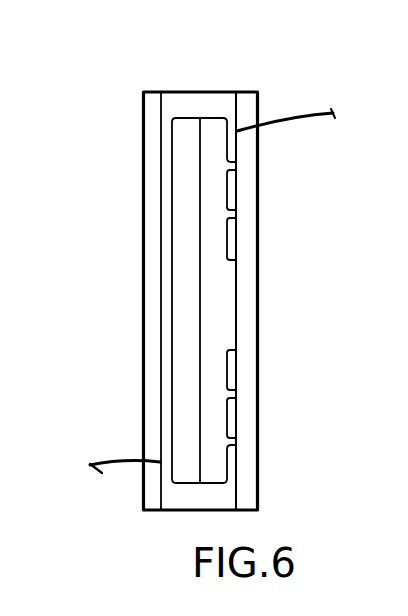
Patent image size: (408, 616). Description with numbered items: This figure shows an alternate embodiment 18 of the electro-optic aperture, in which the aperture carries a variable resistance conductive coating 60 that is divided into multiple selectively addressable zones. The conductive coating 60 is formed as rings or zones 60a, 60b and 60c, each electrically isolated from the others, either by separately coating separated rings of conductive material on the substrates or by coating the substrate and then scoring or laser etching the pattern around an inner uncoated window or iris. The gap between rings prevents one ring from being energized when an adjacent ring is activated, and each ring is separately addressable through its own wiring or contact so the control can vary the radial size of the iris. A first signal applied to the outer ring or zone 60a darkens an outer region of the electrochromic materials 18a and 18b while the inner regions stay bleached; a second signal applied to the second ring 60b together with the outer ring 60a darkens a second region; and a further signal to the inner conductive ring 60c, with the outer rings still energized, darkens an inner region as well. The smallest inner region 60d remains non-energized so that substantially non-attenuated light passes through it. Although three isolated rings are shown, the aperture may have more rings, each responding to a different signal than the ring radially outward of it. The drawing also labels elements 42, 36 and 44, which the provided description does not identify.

The electro-optic aperture (alternate embodiment) 18 is at (214, 290).
The housing 42 is at (187, 91).
The housing wall 36 is at (157, 180).
The electrochromic material 18b is at (182, 270).
The electrochromic material 18a is at (215, 281).
The lead wire 44 is at (287, 113).
The conductive coating 60 is at (273, 150).
The outer ring or zone 60a is at (237, 462).
The second ring or zone 60b is at (237, 420).
The inner conductive ring 60c is at (237, 372).
The smallest inner region 60d is at (236, 317).